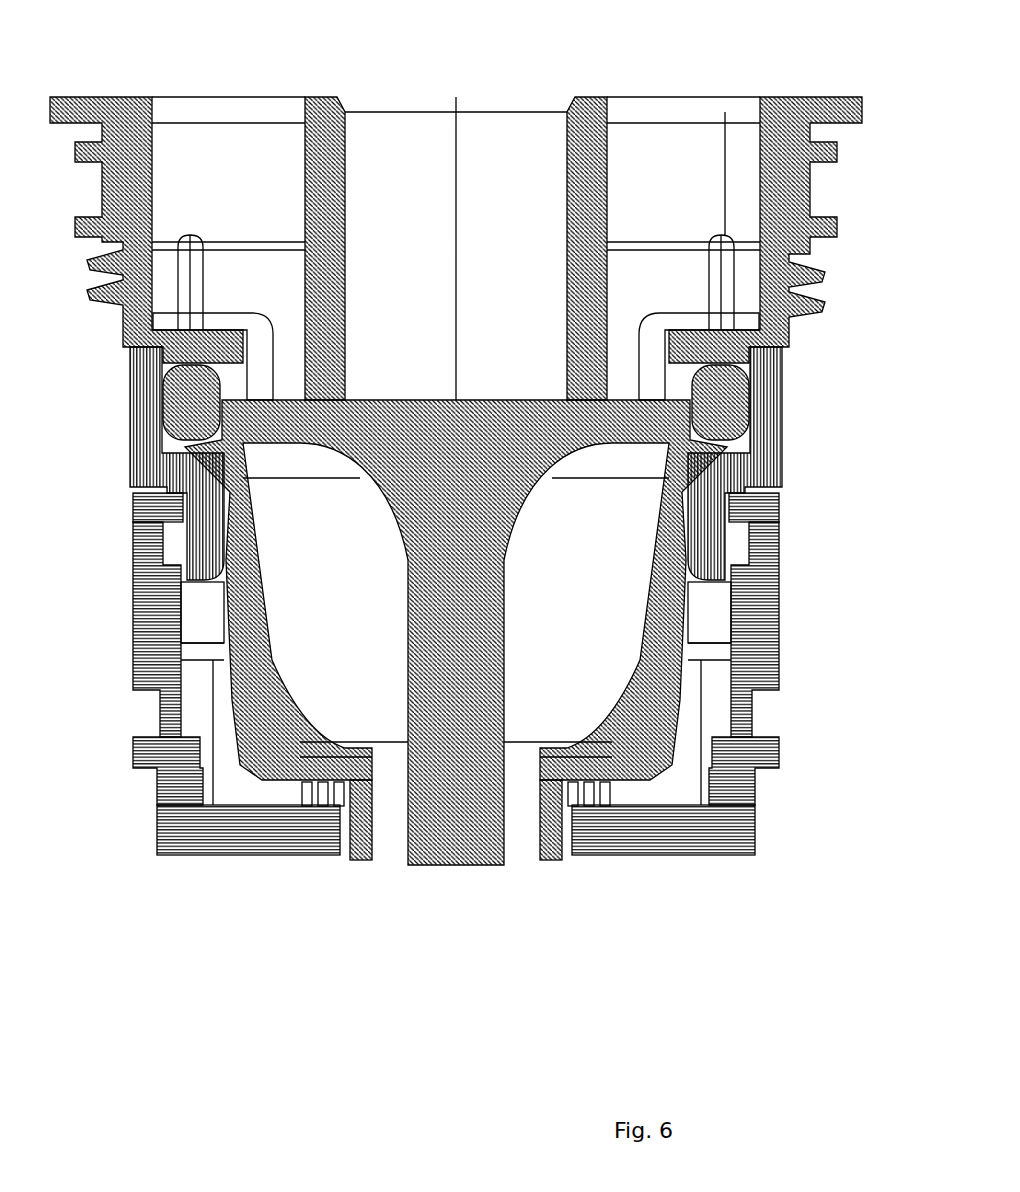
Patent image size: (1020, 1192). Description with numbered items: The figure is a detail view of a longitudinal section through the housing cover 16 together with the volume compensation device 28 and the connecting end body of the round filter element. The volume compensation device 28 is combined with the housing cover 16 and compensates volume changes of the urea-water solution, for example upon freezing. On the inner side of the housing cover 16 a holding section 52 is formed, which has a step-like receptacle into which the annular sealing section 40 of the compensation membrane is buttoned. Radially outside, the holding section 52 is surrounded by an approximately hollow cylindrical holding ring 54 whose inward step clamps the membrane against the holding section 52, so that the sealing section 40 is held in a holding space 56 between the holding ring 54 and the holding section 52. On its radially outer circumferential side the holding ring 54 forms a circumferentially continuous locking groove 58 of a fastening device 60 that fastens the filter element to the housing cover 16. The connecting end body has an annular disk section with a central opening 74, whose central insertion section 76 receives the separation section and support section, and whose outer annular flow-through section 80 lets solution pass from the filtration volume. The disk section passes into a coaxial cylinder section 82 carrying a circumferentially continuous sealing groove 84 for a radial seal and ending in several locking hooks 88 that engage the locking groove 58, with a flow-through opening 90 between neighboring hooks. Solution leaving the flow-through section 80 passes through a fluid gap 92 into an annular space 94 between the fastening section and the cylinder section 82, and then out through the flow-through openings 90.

The housing cover 16 is at (337, 92).
The volume compensation device 28 is at (388, 866).
The sealing section 40 is at (725, 393).
The holding section 52 is at (230, 372).
The holding ring 54 is at (780, 366).
The holding space 56 is at (745, 355).
The locking groove 58 is at (185, 500).
The fastening device 60 is at (782, 507).
The opening 74 is at (575, 860).
The insertion section 76 is at (373, 858).
The flow-through section 80 is at (340, 823).
The cylinder section 82 is at (175, 785).
The sealing groove 84 is at (770, 706).
The locking hooks 88 is at (140, 598).
The flow-through opening 90 is at (710, 605).
The fluid gap 92 is at (645, 787).
The annular space 94 is at (710, 665).